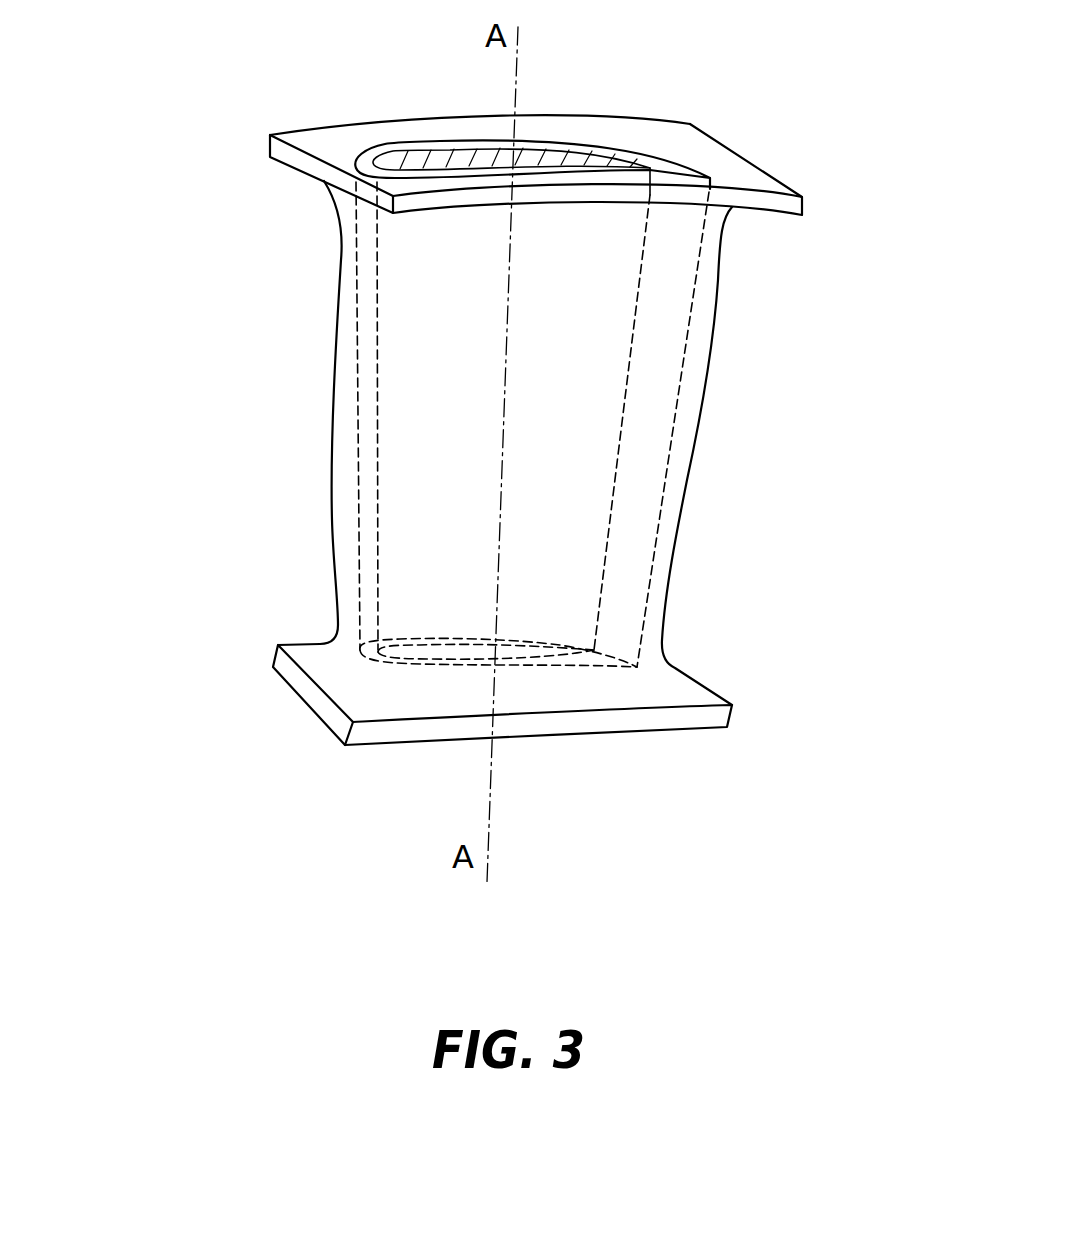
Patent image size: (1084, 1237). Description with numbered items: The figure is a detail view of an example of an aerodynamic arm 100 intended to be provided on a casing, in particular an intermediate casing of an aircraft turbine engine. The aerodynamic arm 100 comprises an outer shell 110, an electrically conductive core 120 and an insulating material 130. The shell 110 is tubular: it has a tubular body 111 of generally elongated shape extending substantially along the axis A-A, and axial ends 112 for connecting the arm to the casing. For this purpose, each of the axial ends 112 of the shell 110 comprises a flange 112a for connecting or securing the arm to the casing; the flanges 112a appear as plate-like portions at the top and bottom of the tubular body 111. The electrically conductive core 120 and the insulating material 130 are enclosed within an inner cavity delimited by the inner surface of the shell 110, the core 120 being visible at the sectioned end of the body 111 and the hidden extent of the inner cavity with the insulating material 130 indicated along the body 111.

The aerodynamic arm 100 is at (770, 108).
The outer shell 110 is at (678, 513).
The tubular body 111 is at (748, 284).
The axial ends 112 is at (245, 127).
The flange 112a is at (335, 152).
The electrically conductive core 120 is at (567, 163).
The insulating material 130 is at (653, 380).